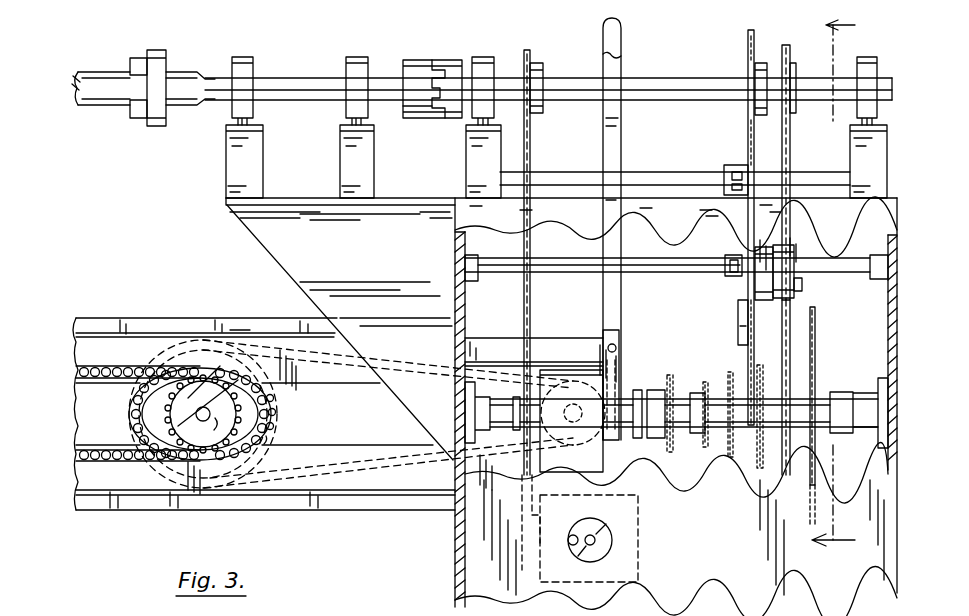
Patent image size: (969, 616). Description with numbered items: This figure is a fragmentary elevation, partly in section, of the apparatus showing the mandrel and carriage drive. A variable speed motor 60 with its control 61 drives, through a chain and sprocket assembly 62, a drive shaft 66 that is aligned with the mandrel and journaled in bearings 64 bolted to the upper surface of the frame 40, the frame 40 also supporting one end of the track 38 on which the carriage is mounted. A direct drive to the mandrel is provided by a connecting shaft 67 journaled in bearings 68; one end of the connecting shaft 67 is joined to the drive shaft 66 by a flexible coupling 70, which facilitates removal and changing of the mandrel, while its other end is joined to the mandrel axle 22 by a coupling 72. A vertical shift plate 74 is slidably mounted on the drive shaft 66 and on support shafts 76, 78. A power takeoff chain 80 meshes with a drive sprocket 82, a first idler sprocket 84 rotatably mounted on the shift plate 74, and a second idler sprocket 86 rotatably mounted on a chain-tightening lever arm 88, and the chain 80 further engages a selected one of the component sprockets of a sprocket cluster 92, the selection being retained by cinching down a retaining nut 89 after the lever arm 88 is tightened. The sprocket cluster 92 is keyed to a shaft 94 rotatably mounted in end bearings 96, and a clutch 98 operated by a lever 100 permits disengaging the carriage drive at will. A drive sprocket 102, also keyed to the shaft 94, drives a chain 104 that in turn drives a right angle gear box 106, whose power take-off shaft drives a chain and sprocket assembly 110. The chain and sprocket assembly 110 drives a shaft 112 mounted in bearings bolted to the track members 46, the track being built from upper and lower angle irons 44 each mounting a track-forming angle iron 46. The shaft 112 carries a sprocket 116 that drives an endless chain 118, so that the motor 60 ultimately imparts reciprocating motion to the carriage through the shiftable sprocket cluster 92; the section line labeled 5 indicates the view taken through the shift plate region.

The axle 22 is at (108, 96).
The coupling 72 is at (153, 124).
The bearings 68 is at (255, 62).
The connecting shaft 67 is at (318, 96).
The flexible coupling 70 is at (426, 112).
The bearings 64 is at (482, 56).
The chain and sprocket assembly 62 is at (532, 142).
The lever 100 is at (620, 66).
The drive shaft 66 is at (692, 92).
The support shaft 78 is at (670, 176).
The vertical shift plate 74 is at (751, 30).
The drive sprocket 82 is at (792, 70).
The power takeoff chain 80 is at (792, 152).
The section line 5- 5 is at (844, 284).
The support shaft 76 is at (652, 268).
The first idler sprocket 84 is at (796, 244).
The second idler sprocket 86 is at (800, 260).
The retaining nut 89 is at (804, 286).
The chain-tightening lever arm 88 is at (742, 318).
The frame 40 is at (466, 304).
The right angle gear box 106 is at (590, 370).
The end bearings 96 is at (476, 422).
The shaft 94 is at (620, 406).
The drive sprocket 102 is at (608, 450).
The clutch 98 is at (668, 380).
The chain 104 is at (668, 452).
The sprocket cluster 92 is at (748, 480).
The variable speed motor 60 is at (640, 542).
The control 61 is at (610, 540).
The track-forming angle iron 46 is at (112, 318).
The angle irons 44 is at (322, 398).
The endless chain 118 is at (66, 400).
The chain and sprocket assembly 110 is at (134, 414).
The shaft 112 is at (203, 409).
The sprocket 116 is at (232, 404).
The track 38 is at (146, 546).